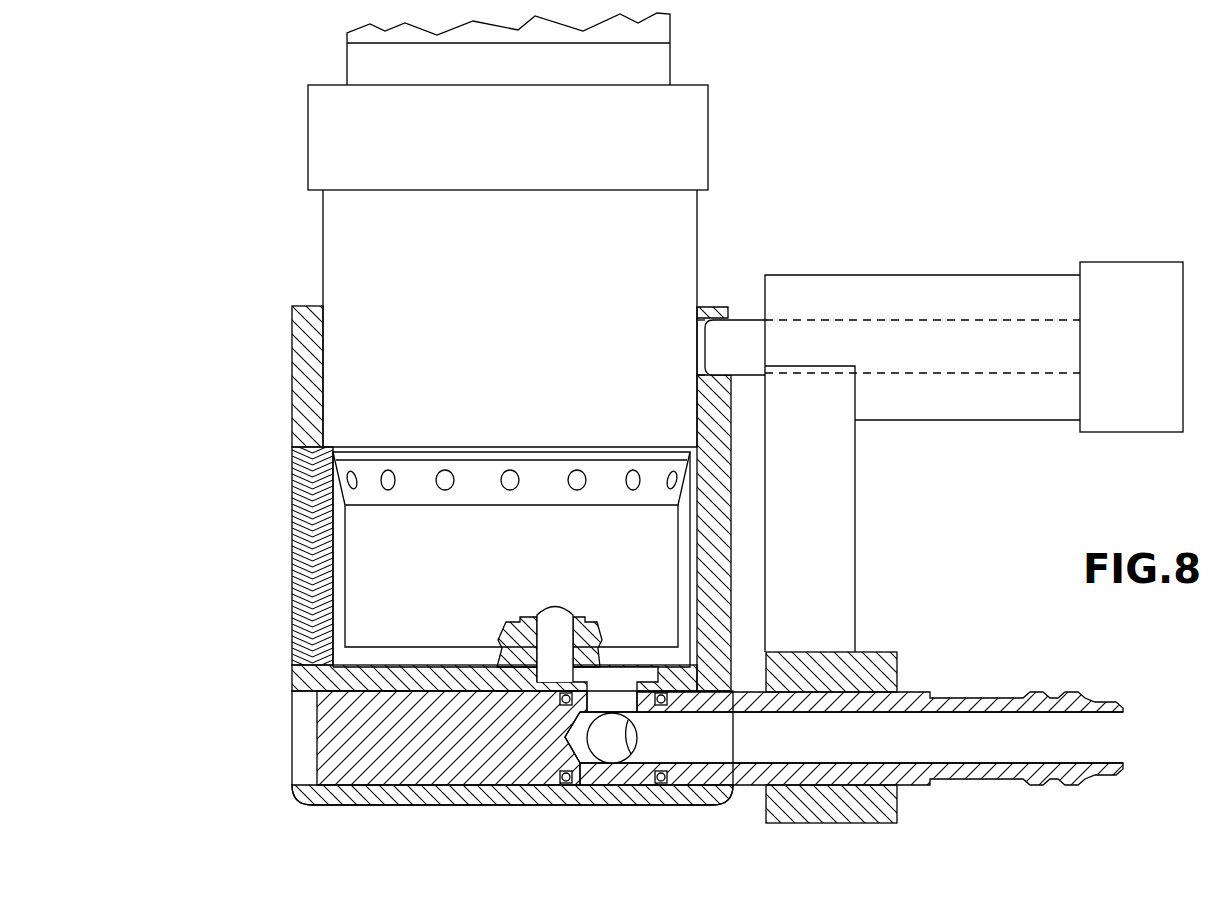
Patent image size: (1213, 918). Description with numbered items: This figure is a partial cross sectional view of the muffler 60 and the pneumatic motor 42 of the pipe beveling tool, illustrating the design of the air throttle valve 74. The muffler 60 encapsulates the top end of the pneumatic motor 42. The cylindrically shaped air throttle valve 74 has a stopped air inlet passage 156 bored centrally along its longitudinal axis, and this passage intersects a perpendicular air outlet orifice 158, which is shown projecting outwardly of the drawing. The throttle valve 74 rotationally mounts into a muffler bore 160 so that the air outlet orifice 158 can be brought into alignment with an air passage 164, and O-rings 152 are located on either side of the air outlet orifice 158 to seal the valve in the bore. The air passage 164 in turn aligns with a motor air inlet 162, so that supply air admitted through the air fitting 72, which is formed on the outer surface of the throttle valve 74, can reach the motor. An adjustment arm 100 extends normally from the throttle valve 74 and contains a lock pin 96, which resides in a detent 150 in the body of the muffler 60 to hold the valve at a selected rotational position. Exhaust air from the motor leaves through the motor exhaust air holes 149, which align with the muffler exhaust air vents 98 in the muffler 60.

The pneumatic motor 42 is at (697, 212).
The muffler 60 is at (292, 336).
The air fitting 72 is at (990, 786).
The air throttle valve 74 is at (742, 787).
The lock pin 96 is at (742, 320).
The muffler exhaust air vents 98 is at (292, 560).
The adjustment arm 100 is at (856, 512).
The motor exhaust air holes 149 is at (363, 480).
The detent 150 is at (697, 348).
The O-rings 152 is at (566, 786).
The air inlet passage 156 is at (1118, 735).
The air outlet orifice 158 is at (637, 740).
The muffler bore 160 is at (300, 770).
The motor air inlet 162 is at (548, 608).
The air passage 164 is at (595, 685).